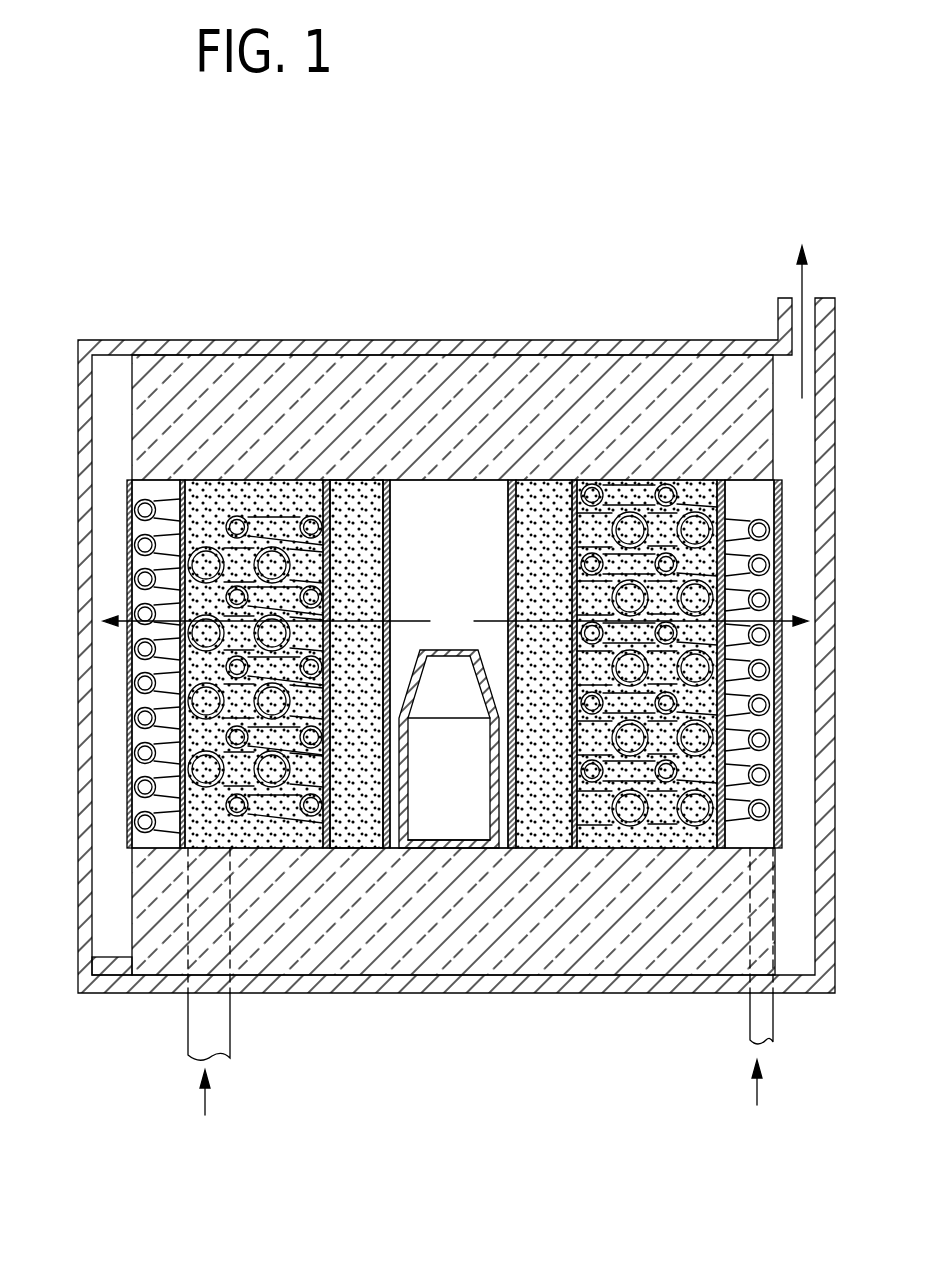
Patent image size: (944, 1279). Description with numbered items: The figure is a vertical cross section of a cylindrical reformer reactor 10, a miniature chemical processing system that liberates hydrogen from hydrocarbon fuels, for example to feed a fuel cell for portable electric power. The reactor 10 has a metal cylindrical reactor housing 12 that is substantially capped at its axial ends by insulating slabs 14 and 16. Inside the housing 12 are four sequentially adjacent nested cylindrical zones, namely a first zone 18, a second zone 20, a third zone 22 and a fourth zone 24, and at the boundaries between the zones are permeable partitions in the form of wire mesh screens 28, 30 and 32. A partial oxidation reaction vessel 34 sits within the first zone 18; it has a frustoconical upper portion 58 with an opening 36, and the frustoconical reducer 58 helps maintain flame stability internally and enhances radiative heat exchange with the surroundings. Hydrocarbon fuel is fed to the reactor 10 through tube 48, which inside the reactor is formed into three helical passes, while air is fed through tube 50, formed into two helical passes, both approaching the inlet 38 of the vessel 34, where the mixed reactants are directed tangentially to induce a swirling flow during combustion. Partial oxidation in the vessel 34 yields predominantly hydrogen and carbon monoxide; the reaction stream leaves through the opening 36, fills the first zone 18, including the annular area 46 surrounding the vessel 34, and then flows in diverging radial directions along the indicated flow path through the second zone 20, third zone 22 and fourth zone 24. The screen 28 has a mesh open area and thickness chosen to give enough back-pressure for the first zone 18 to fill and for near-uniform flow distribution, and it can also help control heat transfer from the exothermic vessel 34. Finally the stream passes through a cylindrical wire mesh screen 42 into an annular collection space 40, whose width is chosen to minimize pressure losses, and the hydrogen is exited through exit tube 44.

The reformer reactor 10 is at (628, 280).
The reactor housing 12 is at (824, 412).
The insulating slab 14 is at (258, 378).
The insulating slab 16 is at (372, 965).
The first zone 18 is at (432, 556).
The second zone 20 is at (367, 537).
The third zone 22 is at (292, 500).
The fourth zone 24 is at (155, 489).
The wire mesh screen 28 is at (374, 850).
The wire mesh screen 30 is at (333, 850).
The wire mesh screen 32 is at (183, 852).
The partial oxidation reaction vessel 34 is at (490, 754).
The opening 36 is at (428, 654).
The inlet 38 is at (432, 827).
The collection space 40 is at (103, 607).
The cylindrical wire mesh screen 42 is at (130, 842).
The exit tube 44 is at (810, 308).
The annular area 46 is at (505, 803).
The tube 48 is at (237, 516).
The tube 50 is at (722, 500).
The frustoconical upper portion 58 is at (482, 670).